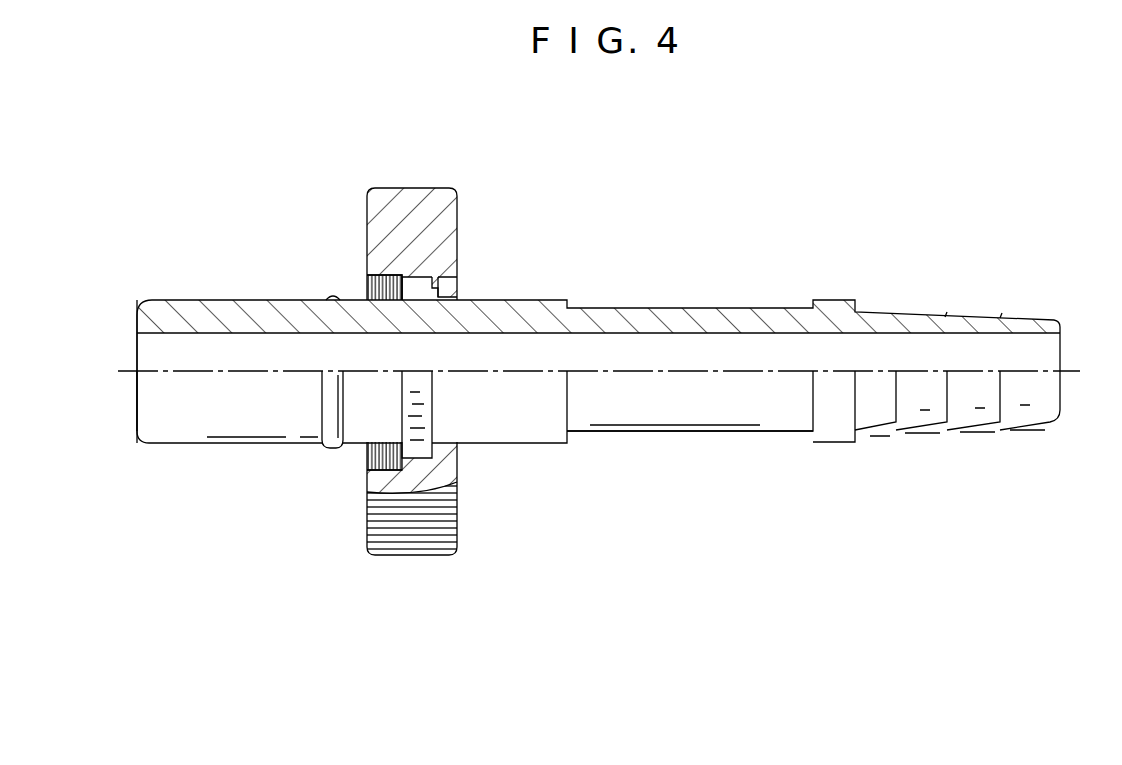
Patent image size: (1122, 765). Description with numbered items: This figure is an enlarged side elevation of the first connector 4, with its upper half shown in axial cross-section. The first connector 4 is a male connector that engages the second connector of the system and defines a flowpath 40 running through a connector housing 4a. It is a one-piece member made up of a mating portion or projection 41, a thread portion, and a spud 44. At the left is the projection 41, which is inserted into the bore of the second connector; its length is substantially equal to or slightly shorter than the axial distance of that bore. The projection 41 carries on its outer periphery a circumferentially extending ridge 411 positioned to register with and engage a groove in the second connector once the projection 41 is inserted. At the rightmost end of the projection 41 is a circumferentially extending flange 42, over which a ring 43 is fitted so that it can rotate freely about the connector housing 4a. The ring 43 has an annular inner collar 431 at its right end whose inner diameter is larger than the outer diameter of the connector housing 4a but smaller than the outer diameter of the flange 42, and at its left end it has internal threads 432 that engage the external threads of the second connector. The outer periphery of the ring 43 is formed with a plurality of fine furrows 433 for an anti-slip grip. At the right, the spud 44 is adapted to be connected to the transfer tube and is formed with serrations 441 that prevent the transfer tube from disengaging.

The first connector 4 is at (748, 196).
The flowpath 40 is at (640, 352).
The connector housing 4a is at (668, 442).
The mating portion or projection 41 is at (376, 590).
The ridge 411 is at (330, 422).
The flange 42 is at (430, 411).
The ring 43 is at (412, 204).
The annular inner collar 431 is at (445, 292).
The internal threads 432 is at (366, 287).
The fine furrows 433 is at (428, 520).
The spud 44 is at (1058, 480).
The serrations 441 is at (1000, 318).